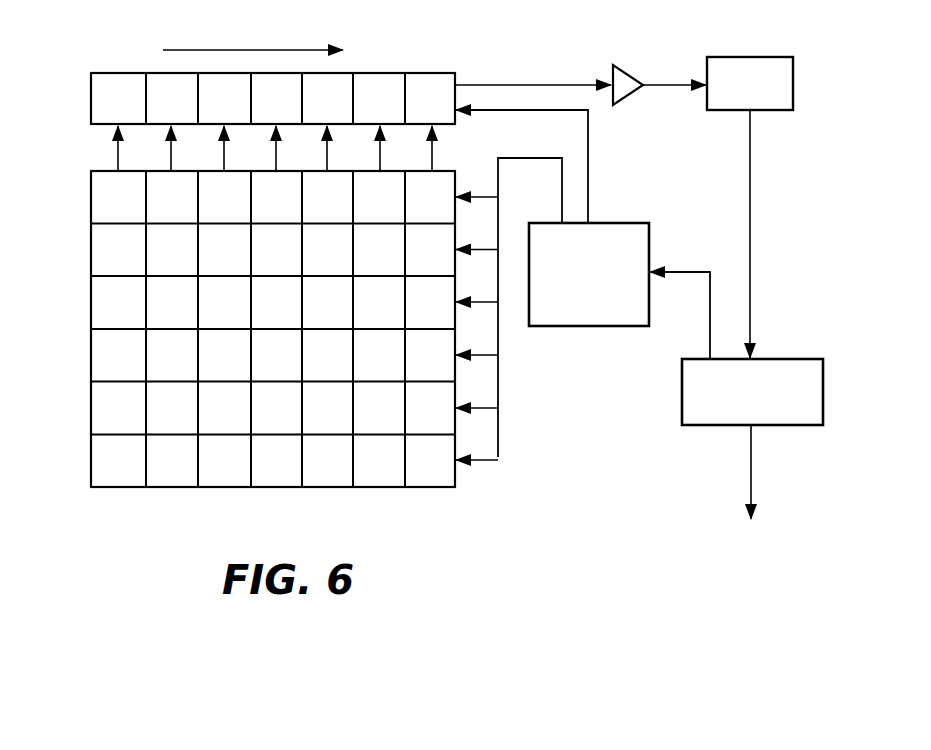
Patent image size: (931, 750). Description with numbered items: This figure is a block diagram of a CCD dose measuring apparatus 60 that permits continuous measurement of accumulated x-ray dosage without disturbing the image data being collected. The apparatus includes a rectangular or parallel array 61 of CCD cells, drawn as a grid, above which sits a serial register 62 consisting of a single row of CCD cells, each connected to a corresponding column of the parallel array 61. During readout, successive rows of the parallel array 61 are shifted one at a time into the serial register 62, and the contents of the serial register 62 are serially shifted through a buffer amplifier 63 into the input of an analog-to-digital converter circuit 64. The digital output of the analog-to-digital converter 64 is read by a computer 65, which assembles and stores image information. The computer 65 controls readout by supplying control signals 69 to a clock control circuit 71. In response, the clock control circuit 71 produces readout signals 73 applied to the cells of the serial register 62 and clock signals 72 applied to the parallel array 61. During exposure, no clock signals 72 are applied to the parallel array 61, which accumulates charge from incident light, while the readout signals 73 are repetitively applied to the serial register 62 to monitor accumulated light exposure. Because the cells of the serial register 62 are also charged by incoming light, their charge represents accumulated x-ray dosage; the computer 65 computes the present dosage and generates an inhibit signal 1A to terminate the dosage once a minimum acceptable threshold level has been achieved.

The CCD dose measuring apparatus 60 is at (82, 504).
The parallel array of CCD cells 61 is at (91, 349).
The serial register 62 is at (91, 95).
The buffer amplifier 63 is at (623, 65).
The analog-to-digital converter circuit 64 is at (740, 57).
The computer 65 is at (772, 359).
The control signals 69 is at (677, 268).
The clock control circuit 71 is at (548, 326).
The clock signals 72 is at (500, 158).
The readout signal 73 is at (590, 137).
The inhibit signal 1A is at (751, 462).